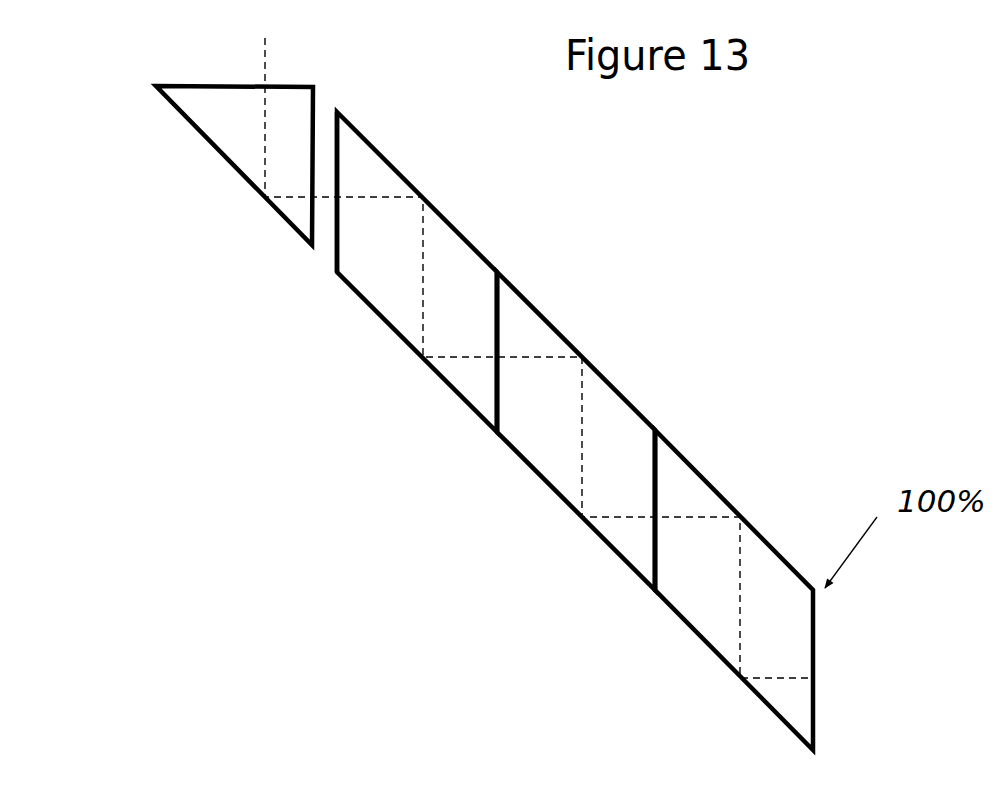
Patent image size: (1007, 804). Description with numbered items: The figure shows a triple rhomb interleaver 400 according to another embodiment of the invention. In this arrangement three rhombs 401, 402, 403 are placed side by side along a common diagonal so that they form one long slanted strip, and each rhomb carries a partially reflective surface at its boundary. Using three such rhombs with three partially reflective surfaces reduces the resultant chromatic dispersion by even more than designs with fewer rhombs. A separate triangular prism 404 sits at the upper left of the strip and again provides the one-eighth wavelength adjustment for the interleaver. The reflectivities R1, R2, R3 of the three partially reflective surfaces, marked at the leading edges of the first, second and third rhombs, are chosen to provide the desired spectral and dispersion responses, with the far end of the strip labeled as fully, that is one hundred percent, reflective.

The rhomb interleaver 400 is at (490, 394).
The first rhomb 401 is at (375, 283).
The second rhomb 402 is at (558, 455).
The third rhomb 403 is at (703, 615).
The triangular prism 404 is at (215, 123).
The reflectivity of first partially reflective surface R1 is at (342, 181).
The reflectivity of second partially reflective surface R2 is at (499, 273).
The reflectivity of third partially reflective surface R3 is at (670, 428).